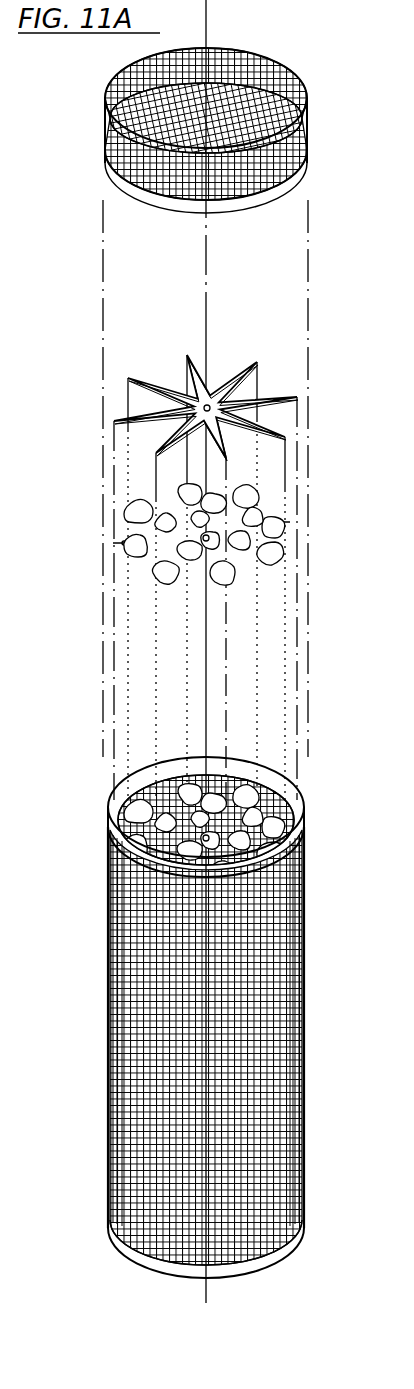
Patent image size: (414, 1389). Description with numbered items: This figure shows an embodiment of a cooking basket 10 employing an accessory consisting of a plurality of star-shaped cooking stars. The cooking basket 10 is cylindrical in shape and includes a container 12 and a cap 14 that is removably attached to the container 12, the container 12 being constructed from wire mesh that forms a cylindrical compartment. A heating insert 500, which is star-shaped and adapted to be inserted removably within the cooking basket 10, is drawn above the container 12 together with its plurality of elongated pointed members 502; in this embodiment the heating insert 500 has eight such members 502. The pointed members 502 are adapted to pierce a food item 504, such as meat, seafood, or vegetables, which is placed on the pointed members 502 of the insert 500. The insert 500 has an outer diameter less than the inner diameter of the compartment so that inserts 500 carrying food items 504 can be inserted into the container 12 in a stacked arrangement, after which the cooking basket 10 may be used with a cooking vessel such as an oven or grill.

The cap 14 is at (265, 62).
The heating insert 500 is at (211, 392).
The elongated pointed member 502 is at (275, 431).
The food item 504 is at (285, 540).
The cooking basket 10 is at (320, 906).
The container 12 is at (302, 1022).